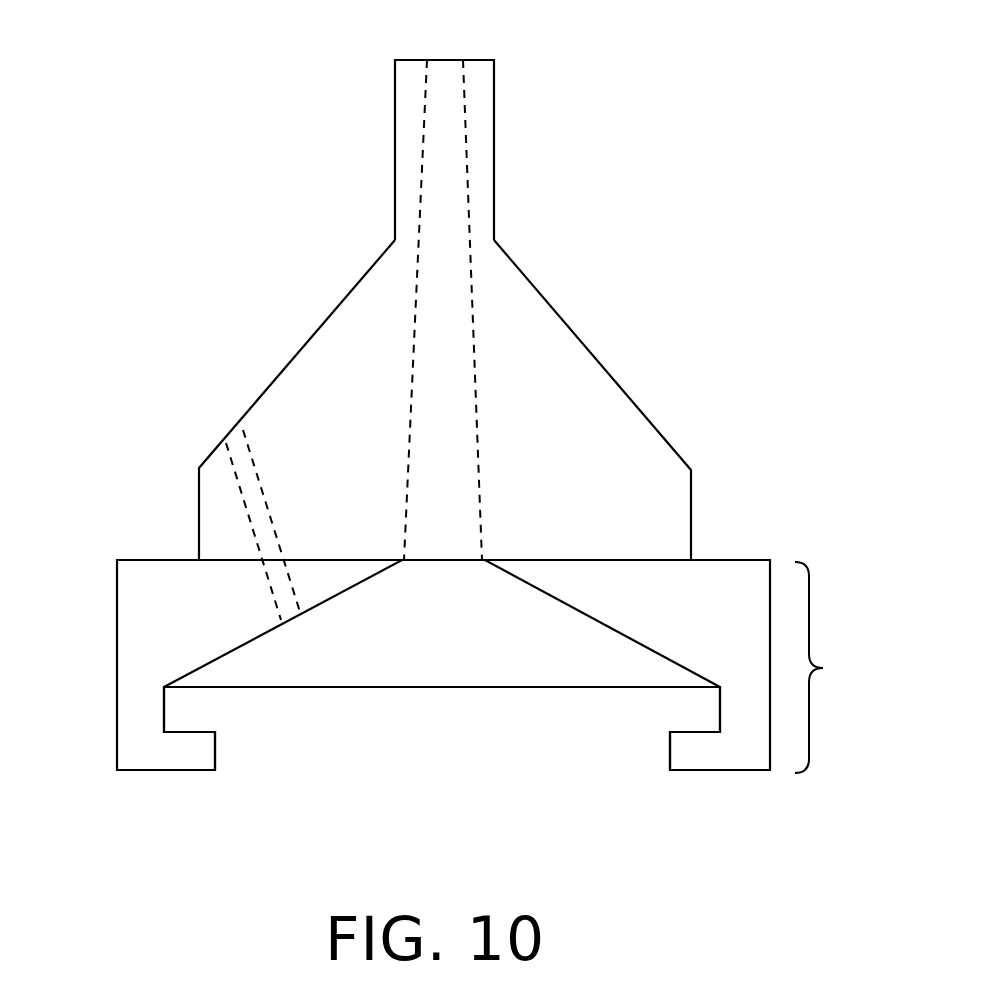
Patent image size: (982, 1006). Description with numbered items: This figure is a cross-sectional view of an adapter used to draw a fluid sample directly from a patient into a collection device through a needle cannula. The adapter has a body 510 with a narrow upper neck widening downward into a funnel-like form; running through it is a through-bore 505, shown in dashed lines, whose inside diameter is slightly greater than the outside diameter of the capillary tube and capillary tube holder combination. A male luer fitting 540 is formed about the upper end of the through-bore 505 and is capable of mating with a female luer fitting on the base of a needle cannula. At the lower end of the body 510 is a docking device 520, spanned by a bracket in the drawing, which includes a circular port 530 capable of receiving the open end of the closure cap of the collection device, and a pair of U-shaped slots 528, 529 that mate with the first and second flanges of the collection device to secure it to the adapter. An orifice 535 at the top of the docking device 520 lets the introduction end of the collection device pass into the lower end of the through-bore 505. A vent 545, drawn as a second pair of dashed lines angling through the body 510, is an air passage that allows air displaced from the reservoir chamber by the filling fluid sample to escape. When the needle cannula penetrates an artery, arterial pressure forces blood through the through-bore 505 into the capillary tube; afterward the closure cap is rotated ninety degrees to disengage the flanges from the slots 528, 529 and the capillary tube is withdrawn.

The male luer fitting 540 is at (500, 123).
The through-bore 505 is at (437, 239).
The body 510 is at (612, 364).
The orifice 535 is at (438, 556).
The vent 545 is at (241, 518).
The docking device 520 is at (505, 666).
The U-shaped slot 528 is at (222, 753).
The U-shaped slot 529 is at (667, 748).
The circular port 530 is at (450, 694).